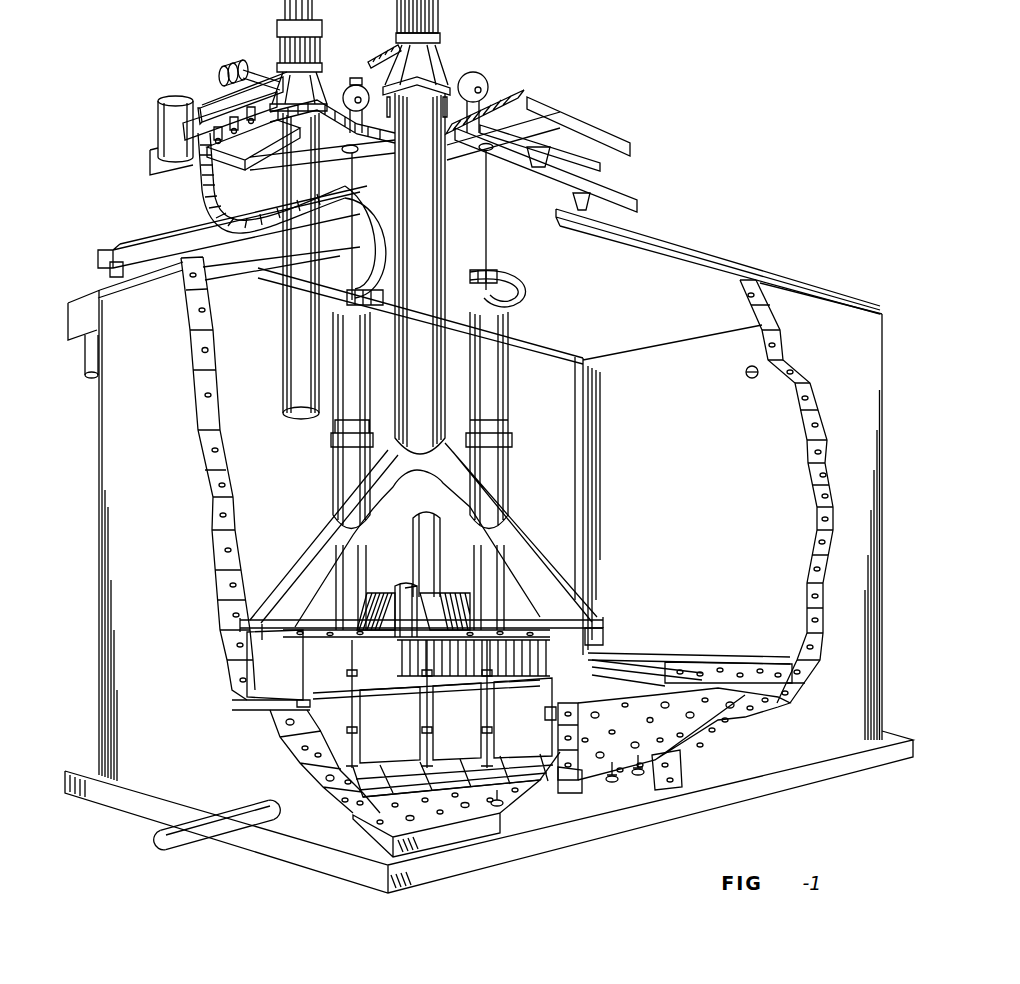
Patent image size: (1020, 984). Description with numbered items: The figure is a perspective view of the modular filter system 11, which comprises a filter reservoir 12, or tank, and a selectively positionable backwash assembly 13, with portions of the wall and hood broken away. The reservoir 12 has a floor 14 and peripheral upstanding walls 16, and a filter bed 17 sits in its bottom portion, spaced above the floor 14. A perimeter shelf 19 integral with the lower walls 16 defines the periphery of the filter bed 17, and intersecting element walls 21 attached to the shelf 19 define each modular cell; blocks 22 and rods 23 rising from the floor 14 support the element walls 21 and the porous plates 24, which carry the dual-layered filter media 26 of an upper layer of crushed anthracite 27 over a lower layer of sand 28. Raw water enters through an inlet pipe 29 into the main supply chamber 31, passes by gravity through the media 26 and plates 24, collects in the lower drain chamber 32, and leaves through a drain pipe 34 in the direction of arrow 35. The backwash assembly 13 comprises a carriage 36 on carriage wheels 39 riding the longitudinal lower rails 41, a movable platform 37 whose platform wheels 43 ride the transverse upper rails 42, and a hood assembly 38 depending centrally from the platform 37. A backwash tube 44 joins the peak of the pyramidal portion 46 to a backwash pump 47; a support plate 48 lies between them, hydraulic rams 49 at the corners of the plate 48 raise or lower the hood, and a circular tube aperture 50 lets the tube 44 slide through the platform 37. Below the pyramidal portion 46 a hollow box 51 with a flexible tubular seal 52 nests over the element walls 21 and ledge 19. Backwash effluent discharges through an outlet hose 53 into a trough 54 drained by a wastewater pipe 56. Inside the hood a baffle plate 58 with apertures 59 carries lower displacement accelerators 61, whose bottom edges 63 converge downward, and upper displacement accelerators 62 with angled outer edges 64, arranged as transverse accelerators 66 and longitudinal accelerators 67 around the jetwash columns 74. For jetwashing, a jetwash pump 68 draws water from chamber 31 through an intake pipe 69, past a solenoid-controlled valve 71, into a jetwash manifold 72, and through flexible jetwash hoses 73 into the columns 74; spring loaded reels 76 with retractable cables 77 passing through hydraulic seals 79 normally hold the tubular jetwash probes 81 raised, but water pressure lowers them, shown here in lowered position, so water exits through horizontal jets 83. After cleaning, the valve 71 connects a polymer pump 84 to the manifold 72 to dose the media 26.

The modular filter system 11 is at (735, 150).
The filter reservoir 12 is at (84, 515).
The backwash assembly 13 is at (533, 70).
The floor 14 is at (745, 780).
The upstanding walls 16 is at (131, 436).
The filter bed 17 is at (714, 546).
The perimeter shelf 19 is at (735, 660).
The element walls 21 is at (628, 668).
The blocks 22 is at (580, 790).
The rods 23 is at (614, 782).
The porous plates 24 is at (392, 801).
The filter media 26 is at (712, 660).
The crushed anthracite 27 is at (700, 722).
The sand 28 is at (685, 762).
The inlet pipe 29 is at (746, 372).
The main supply chamber 31 is at (625, 375).
The lower drain chamber 32 is at (540, 806).
The drain pipe 34 is at (185, 848).
The directional arrow 35 is at (155, 838).
The carriage 36 is at (134, 241).
The movable platform 37 is at (575, 112).
The hood assembly 38 is at (563, 551).
The carriage wheels 39 is at (110, 265).
The lower rails 41 is at (99, 287).
The upper rails 42 is at (595, 158).
The platform wheels 43 is at (572, 147).
The backwash tube 44 is at (447, 248).
The pyramidal portion 46 is at (308, 557).
The backwash pump 47 is at (445, 28).
The support plate 48 is at (452, 76).
The hydraulic rams 49 is at (397, 125).
The circular tube aperture 50 is at (358, 150).
The box 51 is at (595, 640).
The tubular seal 52 is at (310, 705).
The outlet hose 53 is at (393, 48).
The trough 54 is at (64, 333).
The wastewater pipe 56 is at (95, 362).
The baffle plate 58 is at (312, 640).
The apertures 59 is at (317, 627).
The lower displacement accelerators 61 is at (305, 657).
The upper displacement accelerators 62 is at (377, 577).
The bottom edges 63 is at (525, 690).
The outer edges 64 is at (435, 597).
The transverse displacement accelerators 66 is at (435, 565).
The longitudinal displacement accelerators 67 is at (383, 588).
The jetwash pump 68 is at (277, 42).
The intake pipe 69 is at (283, 398).
The solenoid-controlled valve 71 is at (212, 95).
The jetwash manifold 72 is at (158, 172).
The jetwash hoses 73 is at (222, 240).
The jetwash columns 74 is at (372, 378).
The spring loaded reels 76 is at (356, 84).
The retractable cable 77 is at (353, 186).
The hydraulic seal 79 is at (505, 283).
The jetwash probe 81 is at (488, 598).
The horizontal jets 83 is at (358, 690).
The polymer pump 84 is at (165, 97).